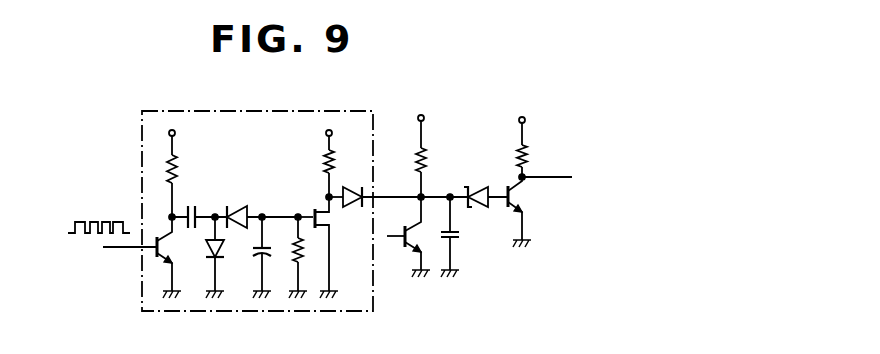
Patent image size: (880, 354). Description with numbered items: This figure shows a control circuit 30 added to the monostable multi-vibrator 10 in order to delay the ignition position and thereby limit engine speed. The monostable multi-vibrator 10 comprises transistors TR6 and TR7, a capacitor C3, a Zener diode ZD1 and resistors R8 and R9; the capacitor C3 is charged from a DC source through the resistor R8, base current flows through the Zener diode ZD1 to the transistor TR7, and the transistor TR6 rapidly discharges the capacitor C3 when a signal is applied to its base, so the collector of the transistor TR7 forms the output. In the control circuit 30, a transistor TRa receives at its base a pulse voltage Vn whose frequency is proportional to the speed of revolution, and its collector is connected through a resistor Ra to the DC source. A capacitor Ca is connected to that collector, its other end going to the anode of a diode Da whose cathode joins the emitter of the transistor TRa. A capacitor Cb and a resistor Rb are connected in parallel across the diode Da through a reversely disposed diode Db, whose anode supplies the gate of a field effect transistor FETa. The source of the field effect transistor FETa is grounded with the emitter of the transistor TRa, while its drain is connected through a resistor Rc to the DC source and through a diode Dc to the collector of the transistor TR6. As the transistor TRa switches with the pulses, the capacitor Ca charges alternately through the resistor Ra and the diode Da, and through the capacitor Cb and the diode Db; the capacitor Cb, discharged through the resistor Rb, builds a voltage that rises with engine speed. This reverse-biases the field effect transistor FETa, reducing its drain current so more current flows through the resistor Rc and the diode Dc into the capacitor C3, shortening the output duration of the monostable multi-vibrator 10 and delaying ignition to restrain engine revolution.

The control circuit 30 is at (258, 111).
The monostable multi-vibrator 10 is at (460, 135).
The pulse voltage Vn is at (95, 222).
The transistor TRa is at (162, 263).
The resistor Ra is at (176, 176).
The capacitor Ca is at (200, 210).
The diode Da is at (207, 248).
The diode Db is at (246, 210).
The capacitor Cb is at (256, 254).
The resistor Rb is at (293, 250).
The resistor Rc is at (324, 163).
The diode Dc is at (350, 190).
The field effect transistor FETa is at (334, 228).
The resistor R8 is at (417, 158).
The transistor TR6 is at (411, 252).
The capacitor C3 is at (473, 238).
The Zener diode ZD1 is at (478, 190).
The transistor TR7 is at (526, 207).
The resistor R9 is at (527, 163).